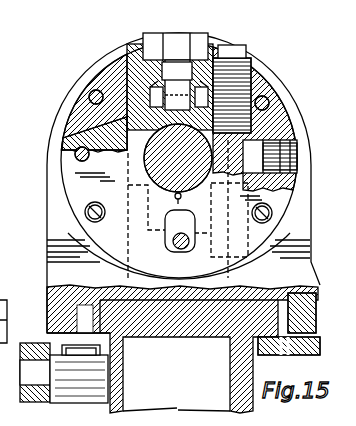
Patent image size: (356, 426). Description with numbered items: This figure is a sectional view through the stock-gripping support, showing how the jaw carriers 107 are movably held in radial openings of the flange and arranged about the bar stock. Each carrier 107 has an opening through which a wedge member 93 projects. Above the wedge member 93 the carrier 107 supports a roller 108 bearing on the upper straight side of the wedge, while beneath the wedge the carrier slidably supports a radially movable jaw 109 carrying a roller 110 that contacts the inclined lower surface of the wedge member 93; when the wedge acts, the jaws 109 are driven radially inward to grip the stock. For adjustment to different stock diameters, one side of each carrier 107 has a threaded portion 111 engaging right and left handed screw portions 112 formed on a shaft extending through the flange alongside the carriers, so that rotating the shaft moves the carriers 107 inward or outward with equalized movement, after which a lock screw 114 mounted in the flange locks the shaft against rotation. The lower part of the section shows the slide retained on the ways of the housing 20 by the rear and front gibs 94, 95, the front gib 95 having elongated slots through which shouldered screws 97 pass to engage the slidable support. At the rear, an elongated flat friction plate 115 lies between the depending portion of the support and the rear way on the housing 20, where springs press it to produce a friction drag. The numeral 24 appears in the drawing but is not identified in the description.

The friction plate 115 is at (318, 283).
The jaw carrier 107 is at (112, 62).
The jaw 109 is at (64, 134).
The roller 110 is at (100, 77).
The roller 108 is at (177, 32).
The threaded portion 111 is at (207, 40).
The screw portion 112 is at (258, 82).
The lock screw 114 is at (282, 131).
The ball pin 24 is at (173, 193).
The wedge member 93 is at (179, 245).
The front gib 95 is at (50, 333).
The housing 20 is at (302, 318).
The rear gib 94 is at (321, 343).
The shouldered screw 97 is at (92, 363).